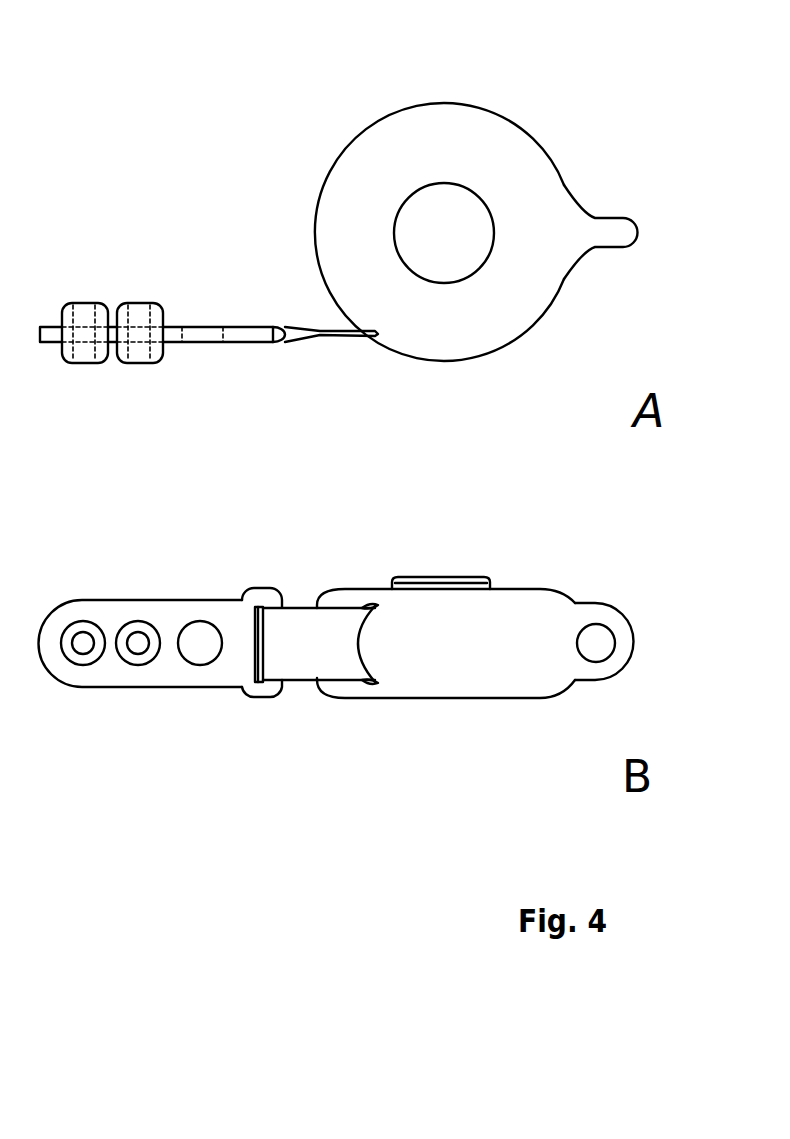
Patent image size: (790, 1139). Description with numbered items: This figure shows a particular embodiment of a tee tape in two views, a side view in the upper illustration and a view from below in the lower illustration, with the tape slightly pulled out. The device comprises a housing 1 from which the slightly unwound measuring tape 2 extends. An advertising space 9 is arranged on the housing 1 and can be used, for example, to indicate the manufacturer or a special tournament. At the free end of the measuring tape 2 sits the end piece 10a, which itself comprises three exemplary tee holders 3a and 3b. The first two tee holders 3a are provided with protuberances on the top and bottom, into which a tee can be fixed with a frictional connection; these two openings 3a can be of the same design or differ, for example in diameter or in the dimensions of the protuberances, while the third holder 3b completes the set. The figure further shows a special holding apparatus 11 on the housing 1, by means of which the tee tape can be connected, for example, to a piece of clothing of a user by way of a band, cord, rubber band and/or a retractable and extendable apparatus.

The housing 1 is at (479, 389).
The measuring tape 2 is at (330, 334).
The tee holders 3a is at (83, 363).
The tee holder 3b is at (205, 342).
The advertising space 9 is at (462, 138).
The end piece 10a is at (255, 332).
The holding apparatus 11 is at (622, 233).